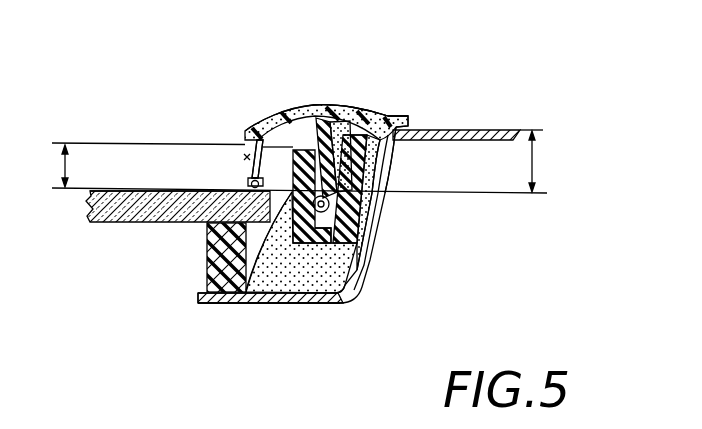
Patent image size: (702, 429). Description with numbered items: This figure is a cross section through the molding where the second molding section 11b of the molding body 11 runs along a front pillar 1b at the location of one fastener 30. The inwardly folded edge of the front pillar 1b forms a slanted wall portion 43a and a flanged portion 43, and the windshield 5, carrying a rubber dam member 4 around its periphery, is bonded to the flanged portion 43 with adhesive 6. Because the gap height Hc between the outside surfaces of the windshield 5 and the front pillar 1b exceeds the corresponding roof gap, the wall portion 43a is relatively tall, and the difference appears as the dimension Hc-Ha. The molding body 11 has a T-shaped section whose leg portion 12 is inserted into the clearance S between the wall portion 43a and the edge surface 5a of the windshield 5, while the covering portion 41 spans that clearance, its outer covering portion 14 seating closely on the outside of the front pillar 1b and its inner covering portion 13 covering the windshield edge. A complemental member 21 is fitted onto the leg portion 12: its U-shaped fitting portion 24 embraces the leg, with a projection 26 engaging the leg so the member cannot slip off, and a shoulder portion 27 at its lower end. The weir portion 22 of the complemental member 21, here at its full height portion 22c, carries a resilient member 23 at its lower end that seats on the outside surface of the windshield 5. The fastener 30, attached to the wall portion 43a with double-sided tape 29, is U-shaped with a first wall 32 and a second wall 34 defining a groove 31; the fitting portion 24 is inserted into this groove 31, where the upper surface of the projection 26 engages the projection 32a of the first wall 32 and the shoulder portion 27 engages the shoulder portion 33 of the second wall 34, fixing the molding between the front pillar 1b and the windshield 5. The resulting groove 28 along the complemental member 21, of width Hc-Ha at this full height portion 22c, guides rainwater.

The front pillar 1b is at (468, 130).
The dam member 4 is at (209, 282).
The windshield 5 is at (113, 224).
The edge surface 5a is at (288, 201).
The adhesive 6 is at (284, 286).
The molding body 11 is at (326, 88).
The second molding section 11b is at (314, 104).
The leg portion 12 is at (380, 176).
The inner covering portion 13 is at (297, 112).
The outer covering portion 14 is at (398, 118).
The complemental member 21 is at (262, 156).
The weir portion 22 is at (224, 130).
The full height portion 22c is at (254, 141).
The resilient member 23 is at (245, 187).
The fitting portion 24 is at (365, 235).
The projection 26 is at (338, 112).
The shoulder portion 27 is at (340, 253).
The groove 28 is at (245, 157).
The double-sided tape 29 is at (374, 190).
The fastener 30 is at (313, 245).
The groove 31 is at (363, 268).
The first wall 32 is at (355, 248).
The projection 32a is at (374, 132).
The shoulder portion 33 is at (246, 304).
The second wall 34 is at (212, 305).
The covering portion 41 is at (340, 104).
The flanged portion 43 is at (268, 305).
The slanted wall portion 43a is at (377, 214).
The clearance S is at (352, 270).
The gap height Hc is at (536, 165).
The gap height Hc-Ha is at (66, 162).